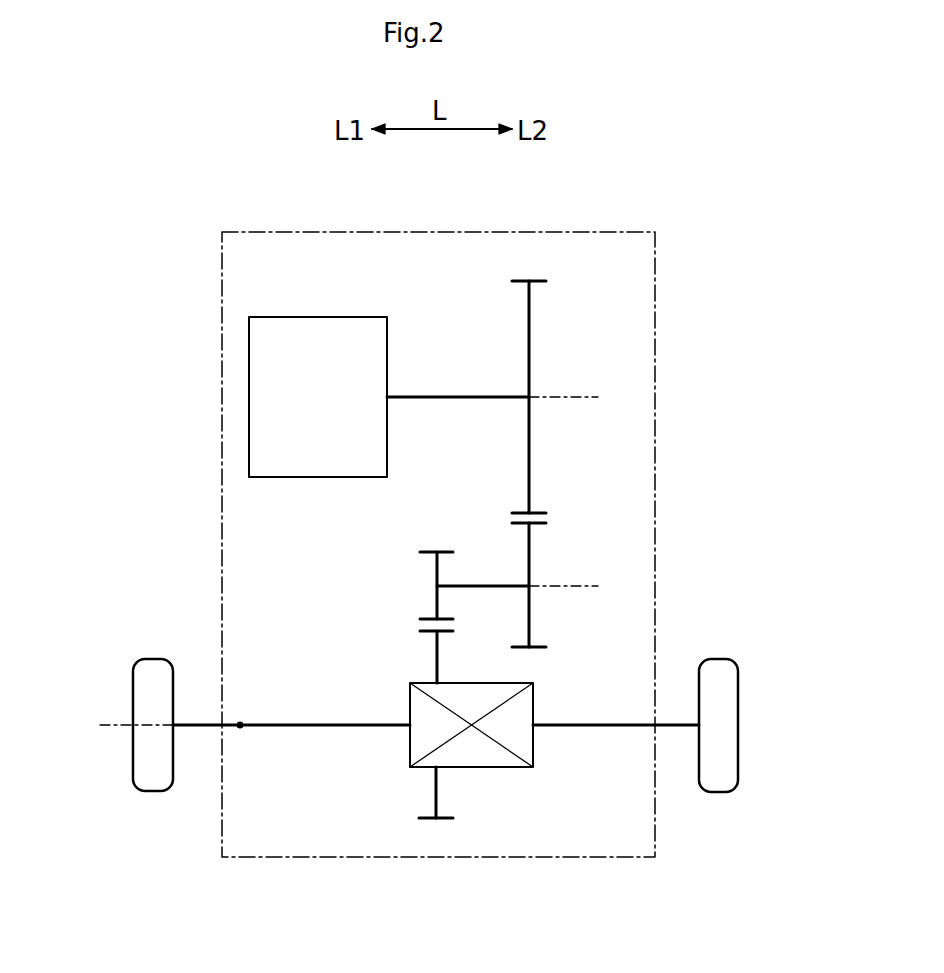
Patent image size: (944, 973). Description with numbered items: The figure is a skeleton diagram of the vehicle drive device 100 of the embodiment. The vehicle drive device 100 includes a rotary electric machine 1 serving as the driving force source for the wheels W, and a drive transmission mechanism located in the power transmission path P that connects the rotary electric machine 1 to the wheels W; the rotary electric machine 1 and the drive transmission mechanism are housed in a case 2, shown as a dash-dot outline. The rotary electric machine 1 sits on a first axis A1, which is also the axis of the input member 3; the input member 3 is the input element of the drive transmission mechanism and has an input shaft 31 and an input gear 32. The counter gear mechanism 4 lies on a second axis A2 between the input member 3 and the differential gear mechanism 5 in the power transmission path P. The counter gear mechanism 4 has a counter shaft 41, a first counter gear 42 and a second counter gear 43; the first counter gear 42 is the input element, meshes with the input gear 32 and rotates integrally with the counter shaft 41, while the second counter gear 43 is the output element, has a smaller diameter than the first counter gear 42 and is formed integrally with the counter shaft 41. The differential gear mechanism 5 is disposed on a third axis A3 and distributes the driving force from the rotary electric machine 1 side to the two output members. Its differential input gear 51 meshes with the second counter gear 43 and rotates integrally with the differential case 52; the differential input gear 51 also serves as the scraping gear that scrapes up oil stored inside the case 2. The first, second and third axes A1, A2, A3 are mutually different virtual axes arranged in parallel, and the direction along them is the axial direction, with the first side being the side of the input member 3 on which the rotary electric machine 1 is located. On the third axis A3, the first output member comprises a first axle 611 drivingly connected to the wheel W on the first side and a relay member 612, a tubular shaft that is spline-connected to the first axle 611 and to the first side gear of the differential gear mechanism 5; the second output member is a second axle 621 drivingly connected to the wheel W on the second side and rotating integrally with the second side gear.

The vehicle drive device 100 is at (196, 191).
The case 2 is at (222, 282).
The power transmission path P is at (605, 313).
The rotary electric machine 1 is at (300, 316).
The input member 3 is at (428, 312).
The input shaft 31 is at (455, 395).
The input gear 32 is at (537, 280).
The first axis A1 is at (581, 398).
The counter gear mechanism 4 is at (393, 568).
The counter shaft 41 is at (483, 585).
The first counter gear 42 is at (548, 650).
The second counter gear 43 is at (430, 550).
The second axis A2 is at (581, 587).
The differential gear mechanism 5 is at (400, 670).
The differential input gear 51 is at (445, 820).
The differential case 52 is at (483, 770).
The third axis A3 is at (115, 726).
The first axle 611 is at (197, 728).
The relay member 612 is at (300, 728).
The second axle 621 is at (605, 728).
The wheel W is at (153, 665).